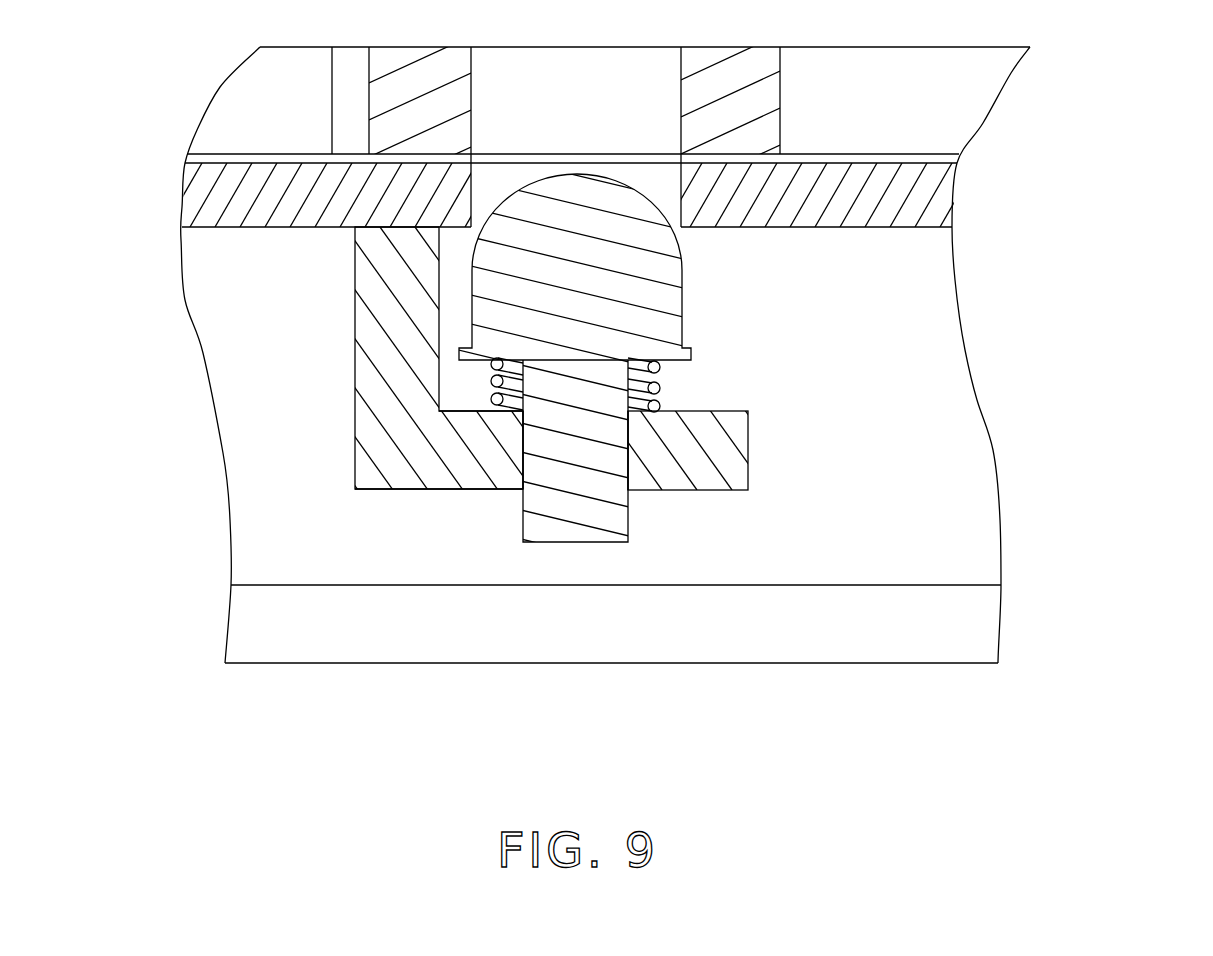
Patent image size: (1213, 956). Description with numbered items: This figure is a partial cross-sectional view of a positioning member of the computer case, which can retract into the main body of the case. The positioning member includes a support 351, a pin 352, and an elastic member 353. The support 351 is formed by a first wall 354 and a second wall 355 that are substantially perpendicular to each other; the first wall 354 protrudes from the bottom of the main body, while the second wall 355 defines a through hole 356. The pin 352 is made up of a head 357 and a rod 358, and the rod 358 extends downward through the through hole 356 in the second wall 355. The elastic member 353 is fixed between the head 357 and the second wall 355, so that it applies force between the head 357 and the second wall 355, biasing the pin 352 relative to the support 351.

The support 351 is at (503, 500).
The first wall 354 is at (373, 342).
The second wall 355 is at (458, 463).
The pin 352 is at (812, 363).
The head 357 is at (623, 262).
The rod 358 is at (562, 428).
The elastic member 353 is at (660, 388).
The through hole 356 is at (630, 457).